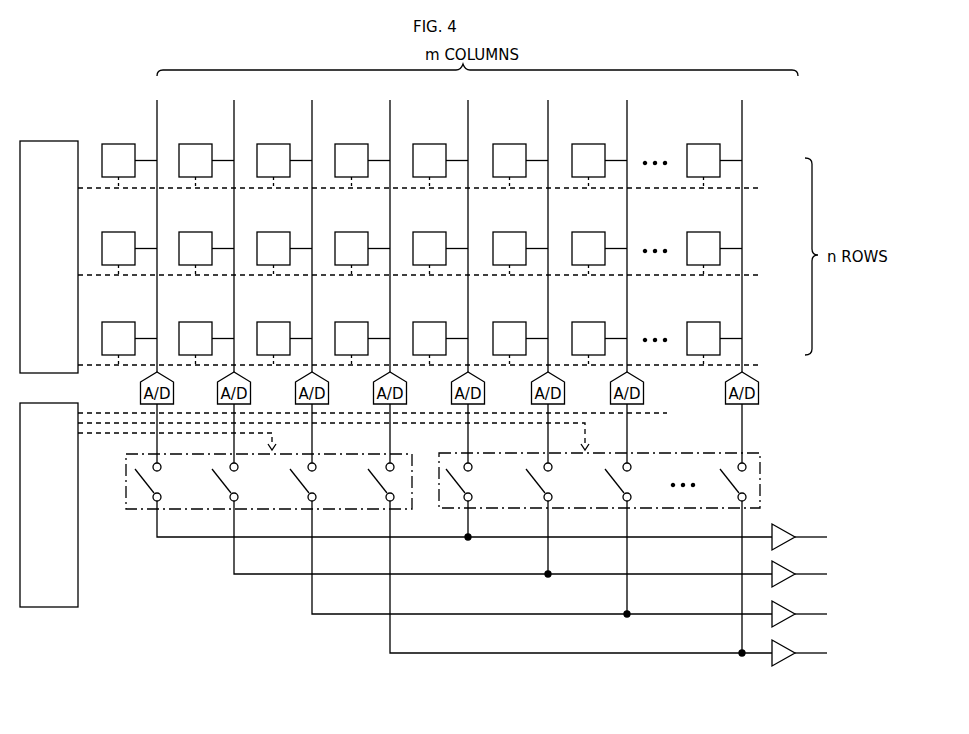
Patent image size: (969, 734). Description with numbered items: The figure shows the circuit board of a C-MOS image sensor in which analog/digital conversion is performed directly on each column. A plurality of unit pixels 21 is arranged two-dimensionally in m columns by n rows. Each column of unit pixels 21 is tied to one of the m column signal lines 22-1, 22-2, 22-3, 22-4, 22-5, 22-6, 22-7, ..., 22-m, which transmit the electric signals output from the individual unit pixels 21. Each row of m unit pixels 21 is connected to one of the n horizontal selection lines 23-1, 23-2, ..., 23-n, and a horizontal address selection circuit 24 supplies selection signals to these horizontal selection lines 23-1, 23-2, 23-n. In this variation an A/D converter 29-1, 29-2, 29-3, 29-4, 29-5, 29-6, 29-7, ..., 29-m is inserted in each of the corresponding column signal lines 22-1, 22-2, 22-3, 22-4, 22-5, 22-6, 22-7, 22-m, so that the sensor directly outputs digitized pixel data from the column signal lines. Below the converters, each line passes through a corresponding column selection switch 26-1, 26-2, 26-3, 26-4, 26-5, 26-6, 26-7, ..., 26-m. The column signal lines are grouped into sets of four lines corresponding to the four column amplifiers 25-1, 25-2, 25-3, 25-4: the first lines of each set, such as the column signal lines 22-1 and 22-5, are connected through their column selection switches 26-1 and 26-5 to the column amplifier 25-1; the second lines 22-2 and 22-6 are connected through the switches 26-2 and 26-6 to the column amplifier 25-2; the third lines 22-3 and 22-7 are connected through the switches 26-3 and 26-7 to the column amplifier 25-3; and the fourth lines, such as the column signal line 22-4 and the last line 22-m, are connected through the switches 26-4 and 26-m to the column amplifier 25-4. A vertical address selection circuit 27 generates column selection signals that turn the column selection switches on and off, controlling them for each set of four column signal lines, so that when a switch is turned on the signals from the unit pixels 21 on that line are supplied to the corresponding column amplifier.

The unit pixel 21 is at (422, 237).
The column signal line 22-1 is at (158, 110).
The column signal line 22-2 is at (235, 110).
The column signal line 22-3 is at (313, 110).
The column signal line 22-4 is at (391, 110).
The column signal line 22-5 is at (469, 110).
The column signal line 22-6 is at (549, 110).
The column signal line 22-7 is at (628, 110).
The column signal line 22-m is at (743, 110).
The horizontal selection line 23-1 is at (743, 187).
The horizontal selection line 23-2 is at (743, 275).
The horizontal selection line 23-n is at (743, 363).
The horizontal address selection circuit 24 is at (49, 141).
The column amplifier 25-1 is at (783, 527).
The column amplifier 25-2 is at (783, 564).
The column amplifier 25-3 is at (783, 604).
The column amplifier 25-4 is at (783, 643).
The column selection switch 26-1 is at (153, 488).
The column selection switch 26-2 is at (230, 488).
The column selection switch 26-3 is at (308, 488).
The column selection switch 26-4 is at (386, 488).
The column selection switch 26-5 is at (464, 488).
The column selection switch 26-6 is at (544, 488).
The column selection switch 26-7 is at (623, 488).
The column selection switch 26-m is at (738, 488).
The vertical address selection circuit 27 is at (45, 608).
The A/D converter 29-1 is at (174, 397).
The A/D converter 29-2 is at (251, 397).
The A/D converter 29-3 is at (329, 397).
The A/D converter 29-4 is at (407, 397).
The A/D converter 29-5 is at (485, 397).
The A/D converter 29-6 is at (565, 397).
The A/D converter 29-7 is at (644, 397).
The A/D converter 29-m is at (759, 397).